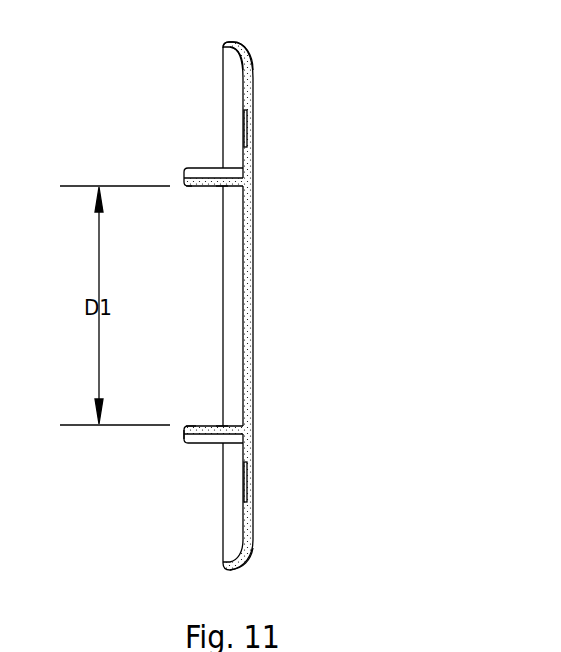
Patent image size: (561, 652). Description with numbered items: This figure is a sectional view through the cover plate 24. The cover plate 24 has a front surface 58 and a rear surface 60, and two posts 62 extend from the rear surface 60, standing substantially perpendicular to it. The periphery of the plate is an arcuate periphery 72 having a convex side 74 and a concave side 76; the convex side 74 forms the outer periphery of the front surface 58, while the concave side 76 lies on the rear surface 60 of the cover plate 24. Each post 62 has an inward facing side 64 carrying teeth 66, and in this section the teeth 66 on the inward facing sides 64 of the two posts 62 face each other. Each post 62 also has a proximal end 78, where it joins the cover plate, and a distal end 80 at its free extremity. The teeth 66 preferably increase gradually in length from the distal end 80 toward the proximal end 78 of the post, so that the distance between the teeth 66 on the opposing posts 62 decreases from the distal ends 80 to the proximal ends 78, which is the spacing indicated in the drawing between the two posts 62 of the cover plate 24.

The cover plate 24 is at (161, 125).
The front surface 58 is at (253, 303).
The rear surface 60 is at (243, 293).
The posts 62 is at (184, 171).
The inward facing sides 64 is at (190, 187).
The teeth 66 is at (220, 187).
The arcuate periphery 72 is at (253, 62).
The convex side 74 is at (238, 50).
The concave side 76 is at (247, 60).
The proximal end 78 is at (244, 452).
The distal end 80 is at (183, 437).